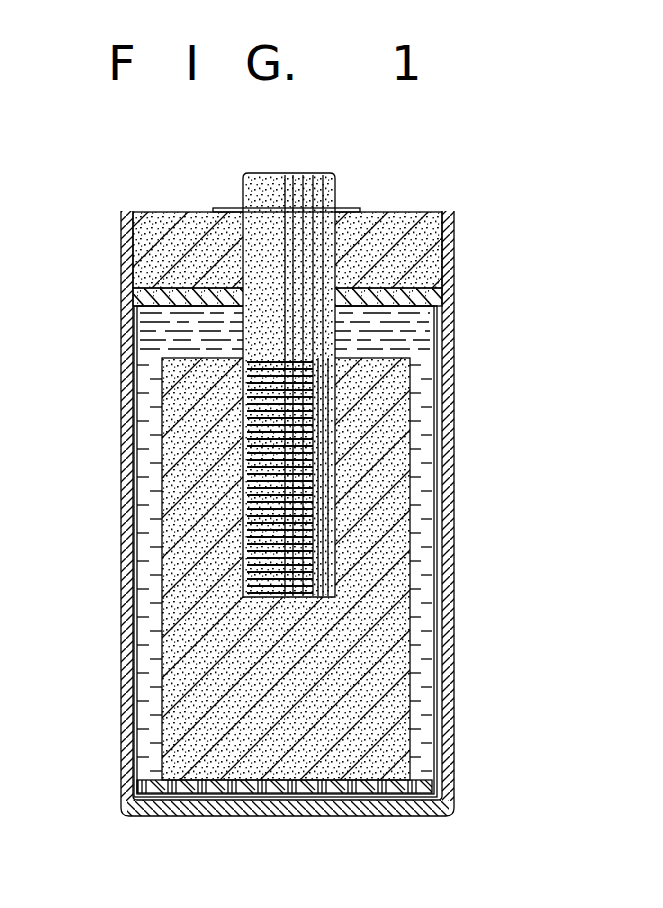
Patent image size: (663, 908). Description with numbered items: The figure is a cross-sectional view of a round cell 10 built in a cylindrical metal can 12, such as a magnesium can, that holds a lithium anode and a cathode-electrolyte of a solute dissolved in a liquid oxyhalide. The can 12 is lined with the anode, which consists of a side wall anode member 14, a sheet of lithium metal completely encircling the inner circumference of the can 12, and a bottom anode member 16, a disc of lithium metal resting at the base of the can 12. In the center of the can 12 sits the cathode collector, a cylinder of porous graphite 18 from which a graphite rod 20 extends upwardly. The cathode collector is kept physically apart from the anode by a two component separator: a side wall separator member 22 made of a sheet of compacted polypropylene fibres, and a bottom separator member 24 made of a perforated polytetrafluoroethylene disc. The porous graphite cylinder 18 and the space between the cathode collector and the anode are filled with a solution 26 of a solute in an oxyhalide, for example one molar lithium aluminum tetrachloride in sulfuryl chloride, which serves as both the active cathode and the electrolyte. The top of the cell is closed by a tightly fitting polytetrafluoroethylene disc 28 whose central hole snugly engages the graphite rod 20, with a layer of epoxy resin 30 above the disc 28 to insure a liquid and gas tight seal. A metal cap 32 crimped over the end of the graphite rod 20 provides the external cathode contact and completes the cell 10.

The round cell 10 is at (458, 284).
The cylindrical metal can 12 is at (447, 327).
The side wall anode member 14 is at (437, 410).
The bottom anode member 16 is at (408, 798).
The porous graphite cylinder 18 is at (383, 603).
The graphite rod 20 is at (335, 190).
The side wall separator member 22 is at (415, 532).
The bottom separator member 24 is at (327, 793).
The solution 26 is at (420, 464).
The polytetrafluoroethylene disc 28 is at (137, 295).
The layer of epoxy resin 30 is at (158, 214).
The metal cap 32 is at (243, 186).